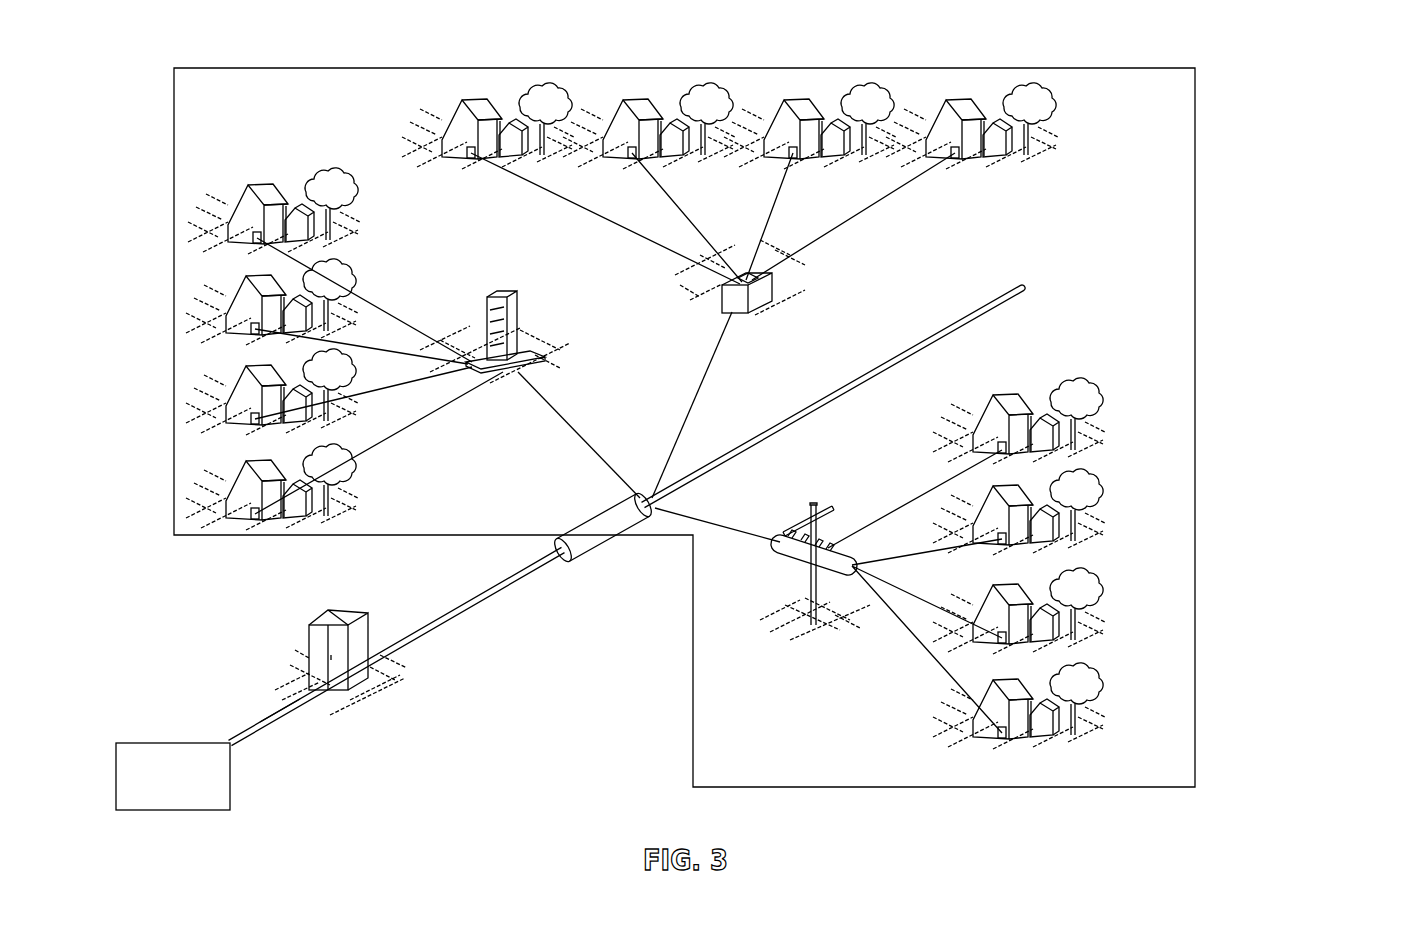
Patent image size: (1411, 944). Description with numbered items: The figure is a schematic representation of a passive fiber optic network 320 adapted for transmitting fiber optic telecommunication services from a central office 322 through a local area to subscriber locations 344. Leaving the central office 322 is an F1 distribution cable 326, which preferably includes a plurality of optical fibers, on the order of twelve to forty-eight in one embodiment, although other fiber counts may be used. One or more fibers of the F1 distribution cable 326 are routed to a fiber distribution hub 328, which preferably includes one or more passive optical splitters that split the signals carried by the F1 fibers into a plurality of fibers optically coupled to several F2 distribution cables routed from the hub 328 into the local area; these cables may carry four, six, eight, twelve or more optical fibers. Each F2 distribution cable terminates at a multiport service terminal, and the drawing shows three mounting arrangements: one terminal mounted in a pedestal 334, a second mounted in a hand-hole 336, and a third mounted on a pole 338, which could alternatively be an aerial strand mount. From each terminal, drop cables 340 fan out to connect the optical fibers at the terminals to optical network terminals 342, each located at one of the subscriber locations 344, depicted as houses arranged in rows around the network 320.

The passive fiber optic network 320 is at (1023, 62).
The central office 322 is at (232, 775).
The F1 distribution cable 326 is at (245, 728).
The F1 distribution cable designation F1 is at (278, 720).
The fiber distribution hub 328 is at (370, 632).
The pedestal 334 is at (515, 322).
The hand-hole 336 is at (748, 276).
The pole 338 is at (800, 622).
The drop cables 340 is at (583, 213).
The optical network terminal 342 is at (256, 240).
The subscriber location 344 is at (285, 200).